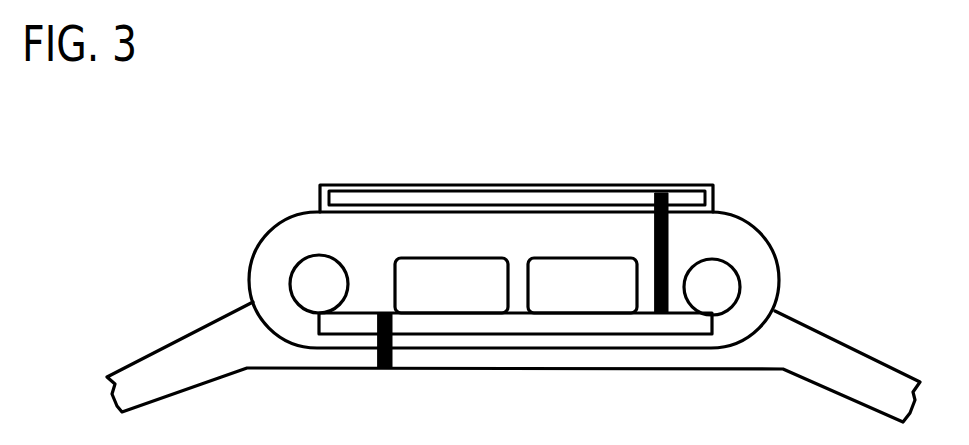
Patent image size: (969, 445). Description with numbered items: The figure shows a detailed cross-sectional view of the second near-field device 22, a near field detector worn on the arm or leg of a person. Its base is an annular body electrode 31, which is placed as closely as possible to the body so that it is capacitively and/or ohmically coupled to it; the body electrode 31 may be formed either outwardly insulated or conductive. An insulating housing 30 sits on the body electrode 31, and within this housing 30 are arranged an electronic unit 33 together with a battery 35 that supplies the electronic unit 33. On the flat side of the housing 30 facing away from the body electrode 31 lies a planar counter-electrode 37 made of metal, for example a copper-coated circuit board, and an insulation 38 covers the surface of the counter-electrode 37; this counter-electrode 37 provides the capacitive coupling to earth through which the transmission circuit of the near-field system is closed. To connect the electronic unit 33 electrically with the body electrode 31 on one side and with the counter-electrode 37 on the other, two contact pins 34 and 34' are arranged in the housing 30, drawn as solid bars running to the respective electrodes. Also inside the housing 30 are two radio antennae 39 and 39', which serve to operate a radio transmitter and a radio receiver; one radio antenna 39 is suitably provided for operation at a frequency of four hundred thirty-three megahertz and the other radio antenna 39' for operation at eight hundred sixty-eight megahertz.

The second near-field device 22 is at (771, 104).
The insulating housing 30 is at (767, 233).
The body electrode 31 is at (145, 385).
The electronic unit 33 is at (468, 303).
The contact pin 34 is at (404, 376).
The contact pin 34' is at (722, 233).
The battery 35 is at (599, 303).
The counter-electrode 37 is at (468, 197).
The insulation 38 is at (388, 191).
The radio antenna 39 is at (264, 279).
The radio antenna 39' is at (770, 287).